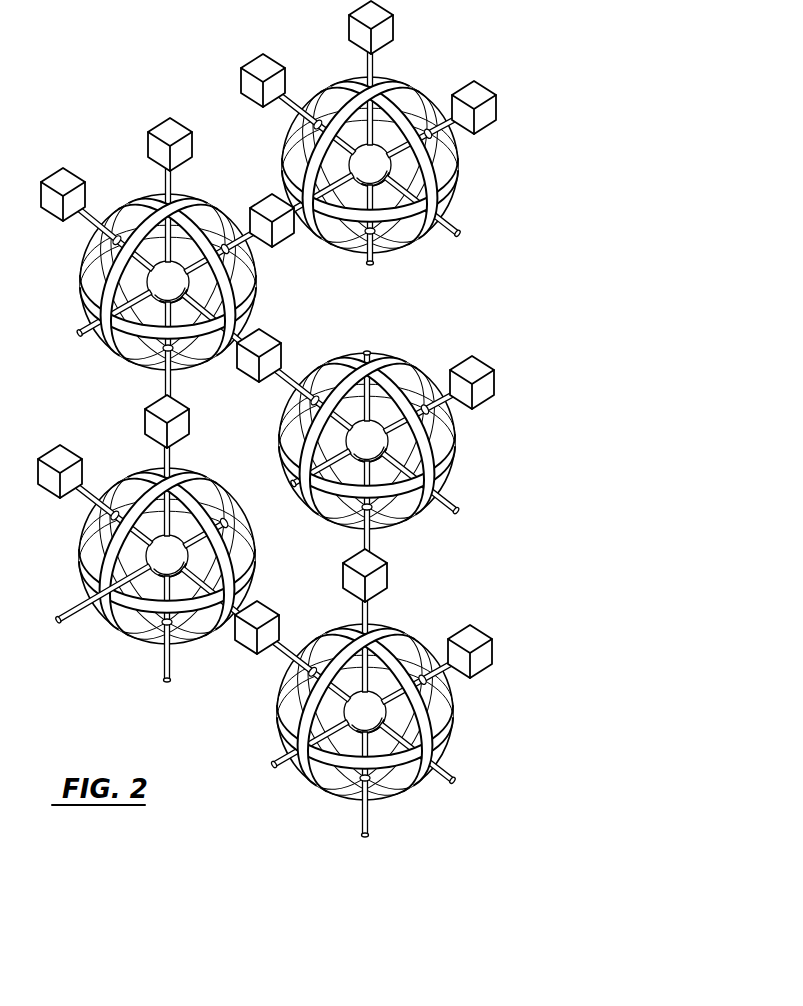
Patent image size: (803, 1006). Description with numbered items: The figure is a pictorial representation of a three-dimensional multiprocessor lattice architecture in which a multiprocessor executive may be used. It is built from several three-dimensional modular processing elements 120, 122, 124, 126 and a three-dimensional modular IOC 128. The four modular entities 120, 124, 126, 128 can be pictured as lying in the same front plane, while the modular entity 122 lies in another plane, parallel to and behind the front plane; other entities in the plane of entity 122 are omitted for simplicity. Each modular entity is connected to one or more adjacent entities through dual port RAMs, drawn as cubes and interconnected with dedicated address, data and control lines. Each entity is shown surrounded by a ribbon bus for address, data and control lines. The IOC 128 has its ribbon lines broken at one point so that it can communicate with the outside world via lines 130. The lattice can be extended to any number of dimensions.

The three-dimensional modular processing element 120 is at (118, 183).
The three-dimensional modular processing element 122 is at (328, 65).
The three-dimensional modular processing element 124 is at (437, 350).
The three-dimensional modular processing element 126 is at (422, 625).
The three-dimensional modular IOC 128 is at (122, 460).
The lines 130 is at (76, 606).